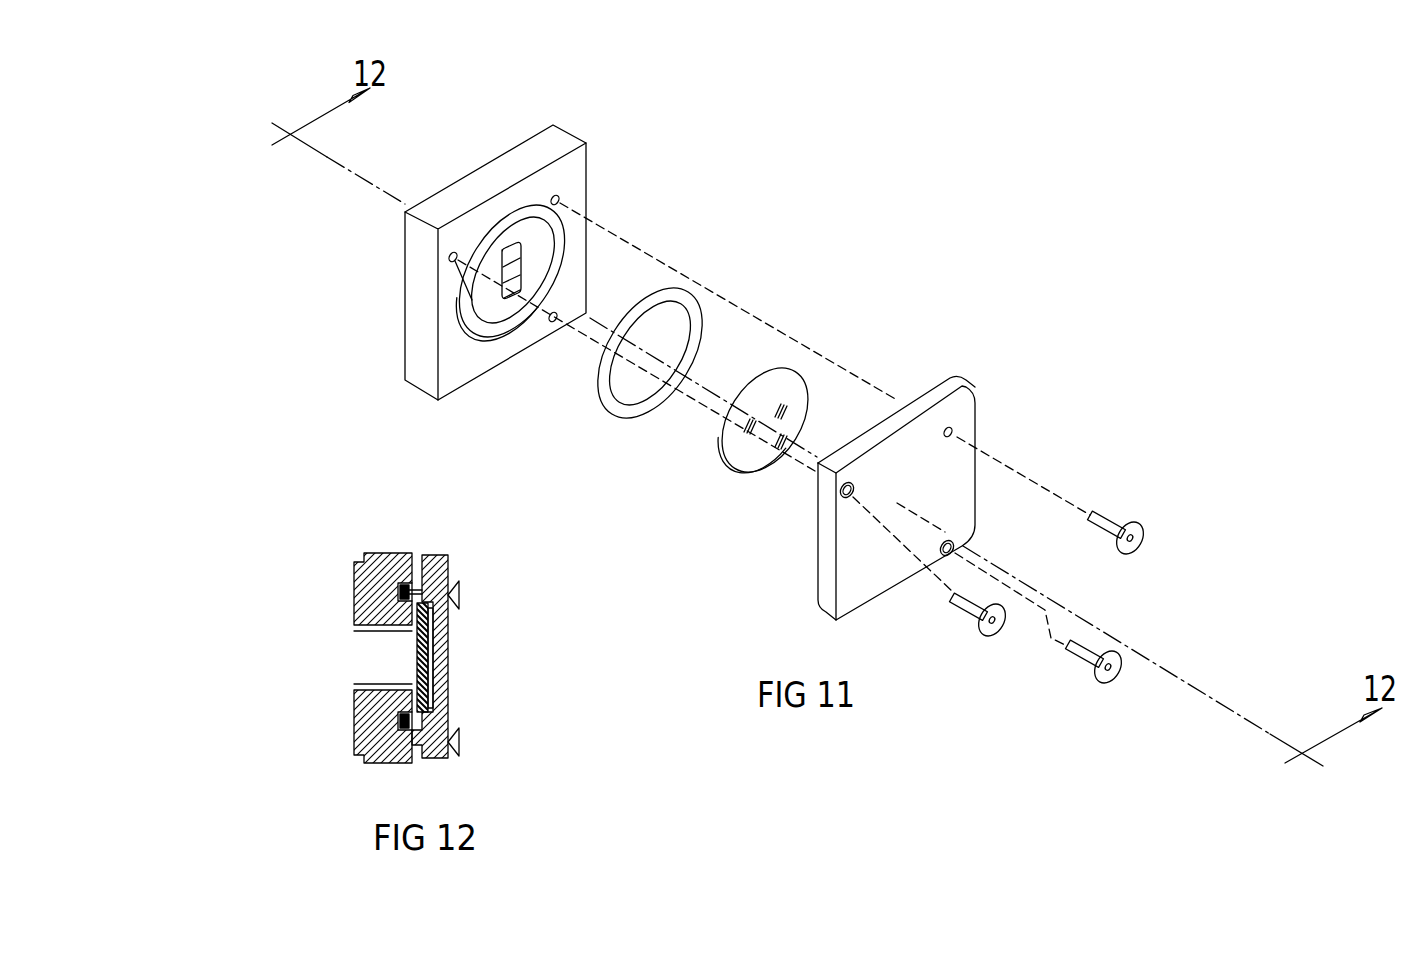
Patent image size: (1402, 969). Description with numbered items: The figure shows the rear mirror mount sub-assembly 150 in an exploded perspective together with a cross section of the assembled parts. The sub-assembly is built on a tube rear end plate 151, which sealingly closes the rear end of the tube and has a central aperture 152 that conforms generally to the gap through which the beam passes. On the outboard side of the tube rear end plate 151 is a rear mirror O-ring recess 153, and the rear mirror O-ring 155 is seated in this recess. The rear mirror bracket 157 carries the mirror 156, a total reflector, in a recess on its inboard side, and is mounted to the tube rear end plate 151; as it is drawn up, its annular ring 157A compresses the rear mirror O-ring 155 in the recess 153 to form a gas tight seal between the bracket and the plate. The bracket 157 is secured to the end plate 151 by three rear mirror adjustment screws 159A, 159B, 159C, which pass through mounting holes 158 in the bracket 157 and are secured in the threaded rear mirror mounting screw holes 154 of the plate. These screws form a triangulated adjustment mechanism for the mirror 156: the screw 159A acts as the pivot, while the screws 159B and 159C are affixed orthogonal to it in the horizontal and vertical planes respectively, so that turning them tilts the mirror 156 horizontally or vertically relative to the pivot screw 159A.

In FIG. 11, the rear mirror mount sub-assembly 150 is at (883, 202).
In FIG. 12, the rear mirror mount sub-assembly 150 is at (332, 657).
In FIG. 11, the tube rear end plate 151 is at (548, 140).
In FIG. 12, the tube rear end plate 151 is at (380, 553).
In FIG. 11, the central aperture 152 is at (512, 250).
In FIG. 11, the rear mirror O-ring recess 153 is at (528, 212).
In FIG. 12, the rear mirror O-ring recess 153 is at (416, 580).
In FIG. 11, the threaded rear mirror mounting screw holes 154 is at (558, 318).
In FIG. 11, the rear mirror O-ring 155 is at (678, 297).
In FIG. 12, the rear mirror O-ring 155 is at (432, 556).
In FIG. 11, the mirror 156 is at (778, 382).
In FIG. 12, the mirror 156 is at (427, 665).
In FIG. 11, the rear mirror bracket 157 is at (940, 393).
In FIG. 12, the annular ring 157A is at (410, 728).
In FIG. 11, the mounting holes 158 is at (855, 488).
In FIG. 11, the rear mirror adjustment screw 159A is at (1133, 522).
In FIG. 12, the rear mirror adjustment screw 159A is at (459, 596).
In FIG. 11, the rear mirror adjustment screw 159B is at (985, 634).
In FIG. 11, the rear mirror adjustment screw 159C is at (1118, 665).
In FIG. 12, the rear mirror adjustment screw 159C is at (459, 742).